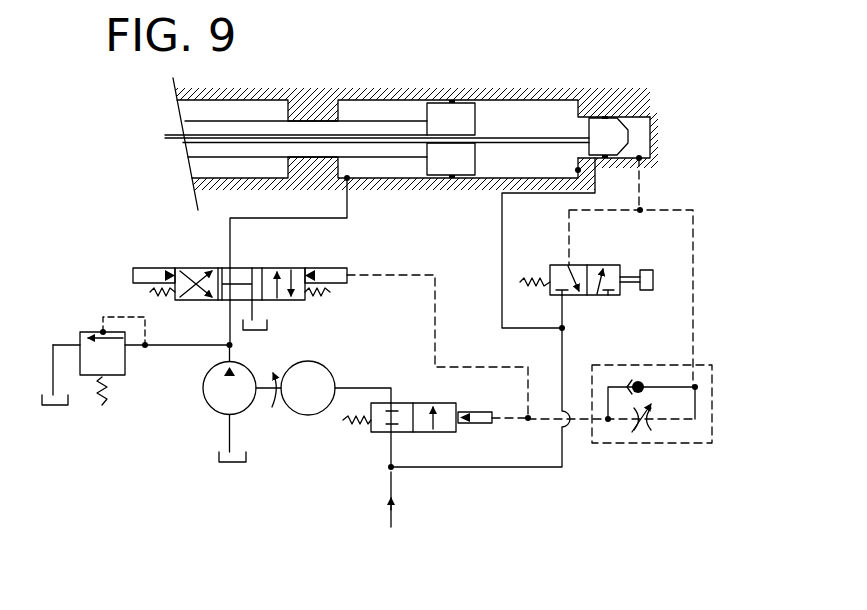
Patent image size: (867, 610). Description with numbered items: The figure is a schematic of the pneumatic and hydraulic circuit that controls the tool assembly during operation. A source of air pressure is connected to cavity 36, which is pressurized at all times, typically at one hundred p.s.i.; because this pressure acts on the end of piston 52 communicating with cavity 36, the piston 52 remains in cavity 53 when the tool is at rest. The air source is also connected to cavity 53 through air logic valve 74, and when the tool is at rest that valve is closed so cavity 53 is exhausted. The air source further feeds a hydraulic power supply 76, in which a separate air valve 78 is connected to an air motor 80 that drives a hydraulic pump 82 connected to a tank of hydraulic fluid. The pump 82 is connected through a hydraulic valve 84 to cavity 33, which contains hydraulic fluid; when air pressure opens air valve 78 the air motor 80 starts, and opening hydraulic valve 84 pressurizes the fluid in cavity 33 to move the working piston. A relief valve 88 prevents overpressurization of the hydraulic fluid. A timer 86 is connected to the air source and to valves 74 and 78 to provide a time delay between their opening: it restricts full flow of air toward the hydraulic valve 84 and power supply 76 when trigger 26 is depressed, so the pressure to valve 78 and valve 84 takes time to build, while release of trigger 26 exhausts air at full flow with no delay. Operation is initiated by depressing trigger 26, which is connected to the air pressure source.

The trigger 26 is at (653, 272).
The cavity 33 is at (400, 170).
The cavity 36 is at (532, 112).
The piston 52 is at (598, 130).
The cavity 53 is at (655, 129).
The air logic valve 74 is at (583, 265).
The hydraulic power supply 76 is at (306, 440).
The air valve 78 is at (380, 433).
The air motor 80 is at (328, 340).
The hydraulic pump 82 is at (205, 405).
The hydraulic valve 84 is at (300, 267).
The timer 86 is at (712, 392).
The relief valve 88 is at (92, 330).